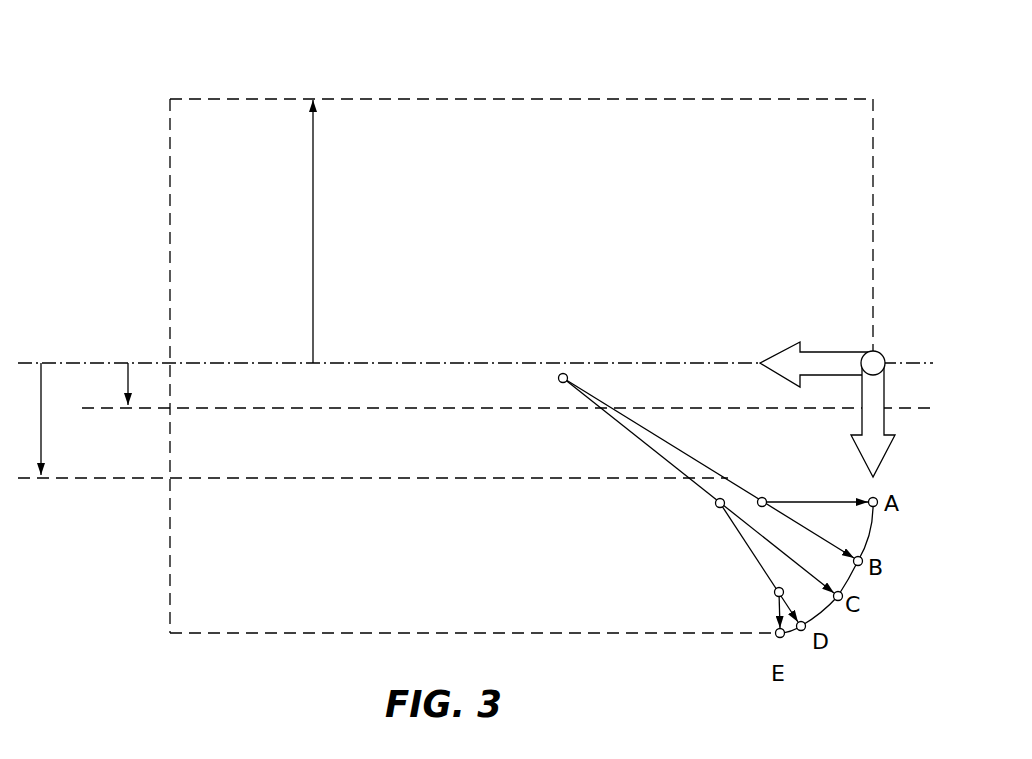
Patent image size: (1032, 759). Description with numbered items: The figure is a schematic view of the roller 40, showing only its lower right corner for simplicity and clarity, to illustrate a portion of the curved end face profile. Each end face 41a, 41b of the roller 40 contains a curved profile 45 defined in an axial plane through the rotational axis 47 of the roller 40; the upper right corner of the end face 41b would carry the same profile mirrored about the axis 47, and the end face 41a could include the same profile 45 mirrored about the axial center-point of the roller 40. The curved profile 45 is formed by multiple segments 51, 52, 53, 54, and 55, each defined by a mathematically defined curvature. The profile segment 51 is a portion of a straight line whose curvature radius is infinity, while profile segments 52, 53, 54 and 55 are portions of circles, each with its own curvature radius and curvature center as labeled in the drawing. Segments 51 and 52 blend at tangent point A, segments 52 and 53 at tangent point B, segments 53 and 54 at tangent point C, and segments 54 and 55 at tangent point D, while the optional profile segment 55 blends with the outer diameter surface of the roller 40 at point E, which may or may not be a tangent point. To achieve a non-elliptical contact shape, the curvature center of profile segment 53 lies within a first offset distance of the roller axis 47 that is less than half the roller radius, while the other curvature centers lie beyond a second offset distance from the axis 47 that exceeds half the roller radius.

The roller 40 is at (475, 328).
The end face 41a is at (168, 182).
The end face 41b is at (873, 170).
The curved profile 45 is at (858, 607).
The rotational axis 47 is at (247, 363).
The profile segment 51 is at (873, 283).
The profile segment 52 is at (869, 532).
The profile segment 53 is at (847, 582).
The profile segment 54 is at (822, 615).
The profile segment 55 is at (788, 638).